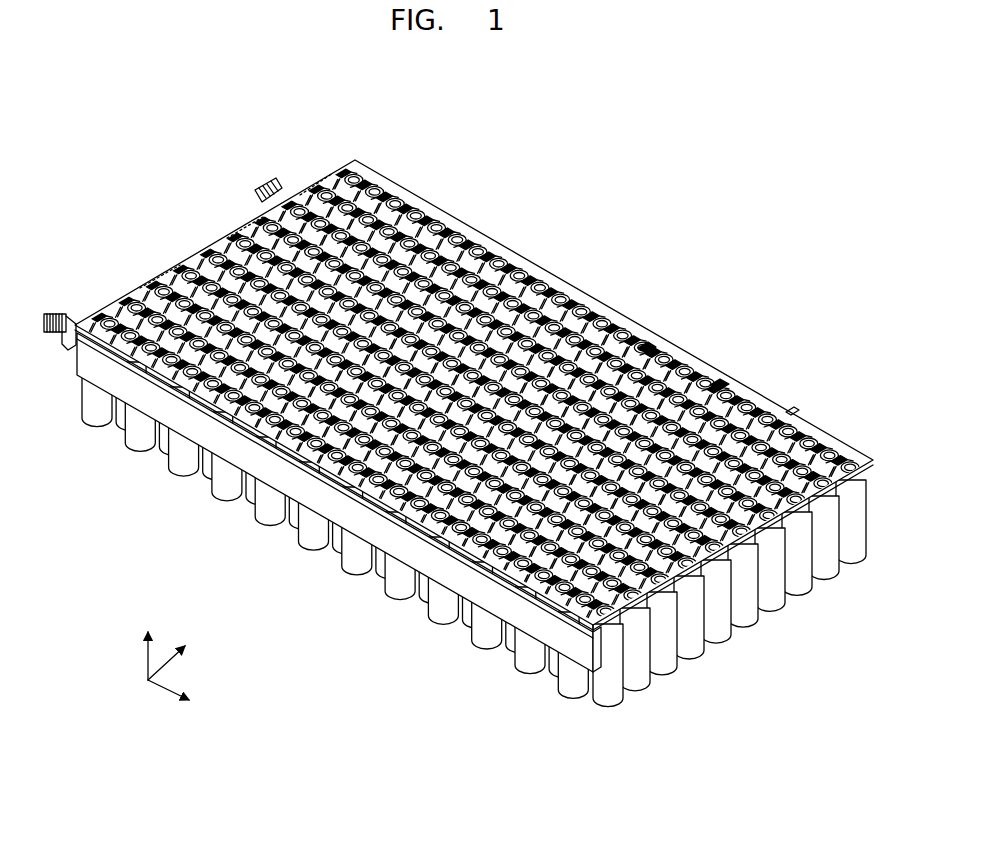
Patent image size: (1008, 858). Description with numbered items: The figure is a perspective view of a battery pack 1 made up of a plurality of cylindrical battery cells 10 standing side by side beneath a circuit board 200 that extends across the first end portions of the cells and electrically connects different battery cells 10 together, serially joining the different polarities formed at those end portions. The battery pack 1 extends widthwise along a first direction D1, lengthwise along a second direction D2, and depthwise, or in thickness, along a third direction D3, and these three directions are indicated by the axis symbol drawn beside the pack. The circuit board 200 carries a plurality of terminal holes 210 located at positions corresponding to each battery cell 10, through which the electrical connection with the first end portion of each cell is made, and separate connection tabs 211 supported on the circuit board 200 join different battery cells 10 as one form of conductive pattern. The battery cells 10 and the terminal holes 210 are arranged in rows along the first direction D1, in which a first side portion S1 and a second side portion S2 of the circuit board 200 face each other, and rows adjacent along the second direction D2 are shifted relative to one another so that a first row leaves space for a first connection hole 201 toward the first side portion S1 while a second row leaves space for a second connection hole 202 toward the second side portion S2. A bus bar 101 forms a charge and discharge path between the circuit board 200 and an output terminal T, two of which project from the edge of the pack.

The battery pack 1 is at (703, 140).
The battery cell 10 is at (612, 670).
The bus bar 101 is at (418, 556).
The circuit board 200 is at (205, 252).
The first connection hole 201 is at (370, 500).
The second connection hole 202 is at (793, 410).
The terminal hole 210 is at (718, 383).
The connection tab 211 is at (645, 345).
The first side portion S1 is at (260, 447).
The second side portion S2 is at (553, 272).
The output terminal T is at (262, 197).
The first direction D1 is at (188, 653).
The second direction D2 is at (186, 702).
The third direction D3 is at (144, 636).